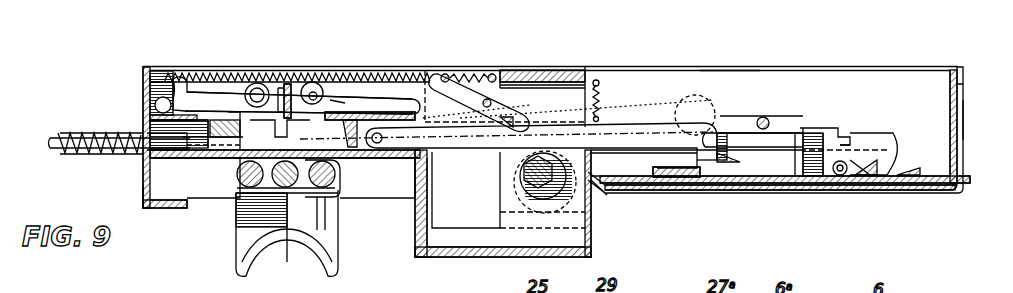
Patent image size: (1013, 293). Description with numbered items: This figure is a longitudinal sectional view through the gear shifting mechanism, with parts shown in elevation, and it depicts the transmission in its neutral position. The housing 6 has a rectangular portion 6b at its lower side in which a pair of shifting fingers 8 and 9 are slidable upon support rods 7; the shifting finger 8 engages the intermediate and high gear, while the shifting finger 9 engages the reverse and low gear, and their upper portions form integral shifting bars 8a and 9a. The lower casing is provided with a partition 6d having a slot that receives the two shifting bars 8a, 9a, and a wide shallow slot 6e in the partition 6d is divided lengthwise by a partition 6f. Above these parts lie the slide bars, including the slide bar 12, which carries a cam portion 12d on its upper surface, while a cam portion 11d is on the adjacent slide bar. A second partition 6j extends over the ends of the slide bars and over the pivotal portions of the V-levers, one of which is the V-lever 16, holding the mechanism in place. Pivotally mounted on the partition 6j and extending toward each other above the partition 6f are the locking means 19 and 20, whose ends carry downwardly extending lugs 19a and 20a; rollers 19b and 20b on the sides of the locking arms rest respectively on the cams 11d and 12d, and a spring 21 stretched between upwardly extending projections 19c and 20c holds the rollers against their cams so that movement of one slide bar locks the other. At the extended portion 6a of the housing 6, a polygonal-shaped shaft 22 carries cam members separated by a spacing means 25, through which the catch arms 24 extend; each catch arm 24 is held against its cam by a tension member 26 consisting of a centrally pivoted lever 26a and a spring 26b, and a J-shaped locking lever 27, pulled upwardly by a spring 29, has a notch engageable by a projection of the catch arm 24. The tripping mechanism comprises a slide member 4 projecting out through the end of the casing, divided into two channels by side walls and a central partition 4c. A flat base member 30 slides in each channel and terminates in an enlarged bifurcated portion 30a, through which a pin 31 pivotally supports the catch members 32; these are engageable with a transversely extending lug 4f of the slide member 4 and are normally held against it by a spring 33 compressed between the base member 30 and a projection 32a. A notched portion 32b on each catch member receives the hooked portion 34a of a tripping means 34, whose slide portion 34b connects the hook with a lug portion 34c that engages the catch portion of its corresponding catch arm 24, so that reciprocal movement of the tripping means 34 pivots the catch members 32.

The slide member 4 is at (966, 170).
The central partition 4c is at (748, 193).
The transversely extending lug 4f is at (963, 137).
The housing 6 is at (198, 68).
The extended portion 6a is at (717, 78).
The rectangular portion 6b is at (410, 113).
The partition 6d is at (147, 192).
The wide shallow slot 6e is at (147, 168).
The partition 6f is at (150, 130).
The second partition 6j is at (158, 102).
The support rods 7 is at (233, 198).
The shifting finger 8 is at (327, 233).
The shifting bar 8a is at (298, 243).
The shifting finger 9 is at (250, 222).
The shifting bar 9a is at (257, 158).
The cam portion 11d is at (345, 95).
The slide bar 12 is at (235, 150).
The cam portion 12d is at (255, 88).
The V-lever 16 is at (217, 148).
The locking means 19 is at (340, 100).
The lug 19a is at (316, 83).
The roller 19b is at (319, 86).
The projection 19c is at (466, 90).
The locking means 20 is at (196, 100).
The lug 20a is at (297, 88).
The roller 20b is at (288, 86).
The projection 20c is at (172, 80).
The spring 21 is at (212, 72).
The polygonal-shaped shaft 22 is at (517, 173).
The catch arm 24 is at (617, 127).
The spacing means 25 is at (560, 82).
The tension member 26 is at (497, 107).
The centrally pivoted lever 26a is at (500, 107).
The spring 26b is at (461, 92).
The locking lever 27 is at (660, 113).
The spring 29 is at (596, 79).
The flat base member 30 is at (795, 150).
The enlarged bifurcated portion 30a is at (835, 172).
The pin 31 is at (857, 163).
The catch members 32 is at (894, 140).
The projection 32a is at (802, 130).
The notched portion 32b is at (851, 141).
The spring 33 is at (826, 121).
The tripping means 34 is at (773, 150).
The hooked portion 34a is at (740, 163).
The slide portion 34b is at (845, 137).
The lug portion 34c is at (690, 153).